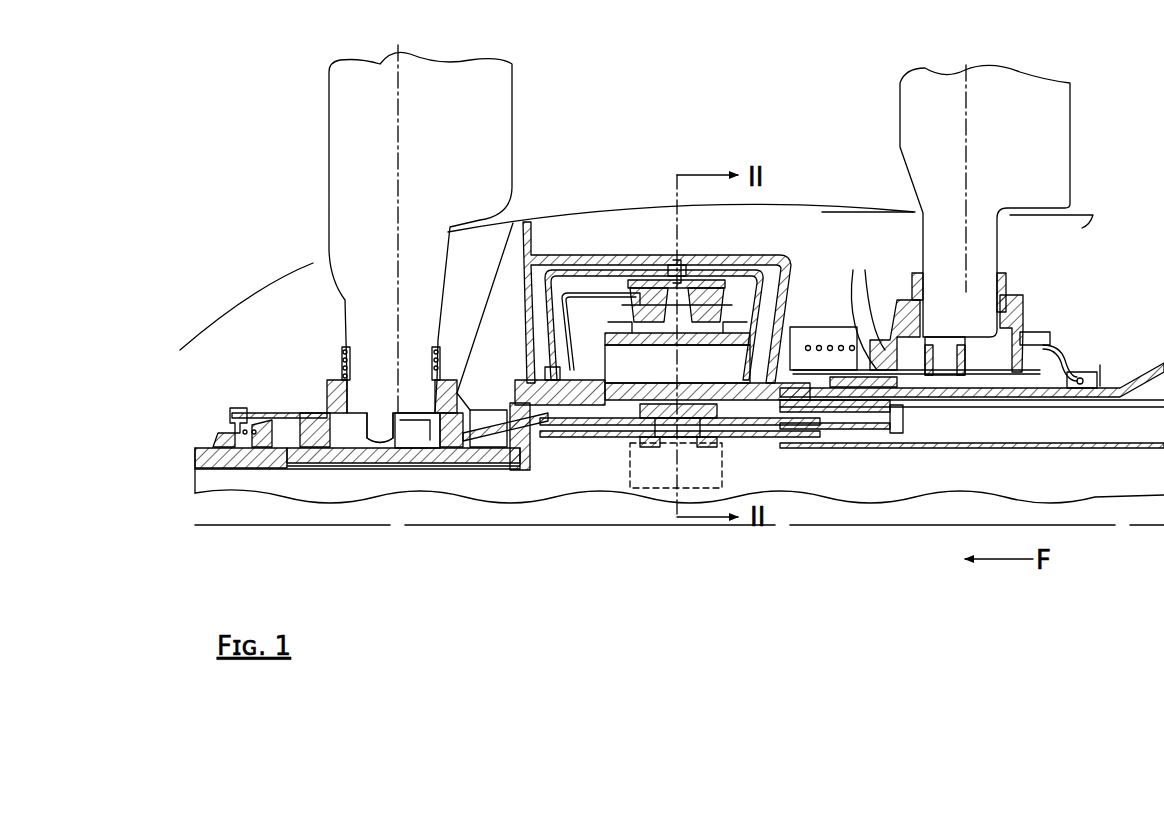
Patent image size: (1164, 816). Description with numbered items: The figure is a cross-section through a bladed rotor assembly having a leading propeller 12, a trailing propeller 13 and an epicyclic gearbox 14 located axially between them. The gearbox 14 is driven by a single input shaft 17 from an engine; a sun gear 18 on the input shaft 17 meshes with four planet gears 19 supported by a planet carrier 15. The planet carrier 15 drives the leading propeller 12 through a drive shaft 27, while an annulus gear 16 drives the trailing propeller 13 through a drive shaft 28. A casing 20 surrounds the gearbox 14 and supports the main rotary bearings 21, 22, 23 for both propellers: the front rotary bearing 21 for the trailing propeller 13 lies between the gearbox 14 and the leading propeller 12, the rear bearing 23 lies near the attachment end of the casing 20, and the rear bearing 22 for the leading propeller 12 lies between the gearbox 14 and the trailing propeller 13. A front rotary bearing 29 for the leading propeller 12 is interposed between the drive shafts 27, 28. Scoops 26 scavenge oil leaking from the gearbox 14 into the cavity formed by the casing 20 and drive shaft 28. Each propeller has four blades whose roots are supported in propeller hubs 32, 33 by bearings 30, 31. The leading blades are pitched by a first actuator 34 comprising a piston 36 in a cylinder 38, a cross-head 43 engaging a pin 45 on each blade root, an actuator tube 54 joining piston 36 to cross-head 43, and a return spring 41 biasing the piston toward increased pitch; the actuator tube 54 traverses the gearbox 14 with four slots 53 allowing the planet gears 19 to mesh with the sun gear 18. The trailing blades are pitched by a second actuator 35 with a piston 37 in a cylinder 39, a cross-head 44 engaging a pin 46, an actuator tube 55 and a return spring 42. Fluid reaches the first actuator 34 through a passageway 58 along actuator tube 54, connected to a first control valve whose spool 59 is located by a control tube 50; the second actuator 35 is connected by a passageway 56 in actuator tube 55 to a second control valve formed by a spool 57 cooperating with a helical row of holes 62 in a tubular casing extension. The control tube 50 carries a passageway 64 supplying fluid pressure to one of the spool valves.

The leading propeller 12 is at (329, 185).
The trailing propeller 13 is at (1070, 148).
The gearbox 14 is at (588, 310).
The planet carrier 15 is at (605, 440).
The annulus gear 16 is at (655, 290).
The input shaft 17 is at (1115, 455).
The sun gear 18 is at (676, 465).
The planet gears 19 is at (740, 360).
The casing 20 is at (598, 258).
The front rotary bearing 21 is at (540, 378).
The rear bearing 22 is at (773, 400).
The rear bearing 23 is at (1080, 370).
The scoops 26 is at (684, 268).
The drive shaft 27 is at (490, 435).
The drive shaft 28 is at (773, 262).
The front rotary bearing 29 is at (545, 430).
The bearing 30 is at (345, 348).
The bearing 31 is at (1000, 275).
The propeller hub 32 is at (330, 383).
The propeller hub 33 is at (1020, 320).
The first actuator 34 is at (300, 413).
The second actuator 35 is at (850, 320).
The piston 36 is at (300, 440).
The piston 37 is at (860, 300).
The cylinder 38 is at (290, 412).
The cylinder 39 is at (820, 350).
The return spring 41 is at (240, 432).
The return spring 42 is at (845, 335).
The cross-head 43 is at (355, 440).
The cross-head 44 is at (962, 360).
The pin 45 is at (382, 438).
The pin 46 is at (930, 355).
The control tube 50 is at (1050, 410).
The slots 53 is at (718, 480).
The actuator tube 54 is at (223, 470).
The actuator tube 55 is at (1000, 380).
The passageway 56 is at (868, 345).
The spool 57 is at (890, 345).
The passageway 58 is at (487, 455).
The spool 59 is at (870, 390).
The holes 62 is at (855, 375).
The passageway 64 is at (1080, 405).